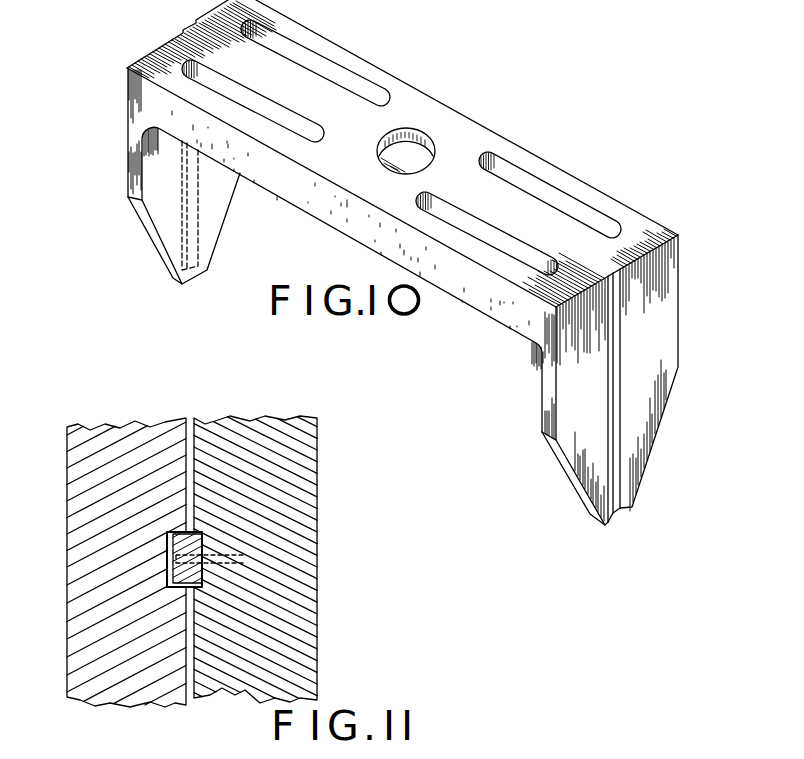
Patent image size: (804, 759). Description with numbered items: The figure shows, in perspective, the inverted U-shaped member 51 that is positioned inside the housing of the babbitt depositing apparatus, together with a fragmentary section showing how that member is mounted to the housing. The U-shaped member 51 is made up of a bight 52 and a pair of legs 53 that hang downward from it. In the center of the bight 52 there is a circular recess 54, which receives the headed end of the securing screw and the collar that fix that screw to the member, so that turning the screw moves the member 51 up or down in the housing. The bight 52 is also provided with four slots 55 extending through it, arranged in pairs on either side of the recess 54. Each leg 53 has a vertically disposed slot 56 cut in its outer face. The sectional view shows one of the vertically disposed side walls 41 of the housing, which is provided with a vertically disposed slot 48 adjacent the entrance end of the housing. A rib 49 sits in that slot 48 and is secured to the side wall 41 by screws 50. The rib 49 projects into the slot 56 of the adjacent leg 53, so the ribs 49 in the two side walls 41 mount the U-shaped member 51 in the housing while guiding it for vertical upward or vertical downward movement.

In FIG. 11, the side wall 41 is at (305, 500).
In FIG. 11, the slot 48 is at (204, 544).
In FIG. 11, the rib 49 is at (193, 576).
In FIG. 11, the screws 50 is at (243, 559).
In FIG. 10, the inverted U-shaped member 51 is at (401, 262).
In FIG. 11, the inverted U-shaped member 51 is at (162, 545).
In FIG. 10, the bight 52 is at (407, 97).
In FIG. 10, the leg 53 is at (162, 210).
In FIG. 11, the leg 53 is at (158, 445).
In FIG. 10, the circular recess 54 is at (414, 140).
In FIG. 10, the slot 55 is at (290, 50).
In FIG. 10, the slot 56 is at (192, 176).
In FIG. 11, the slot 56 is at (201, 567).